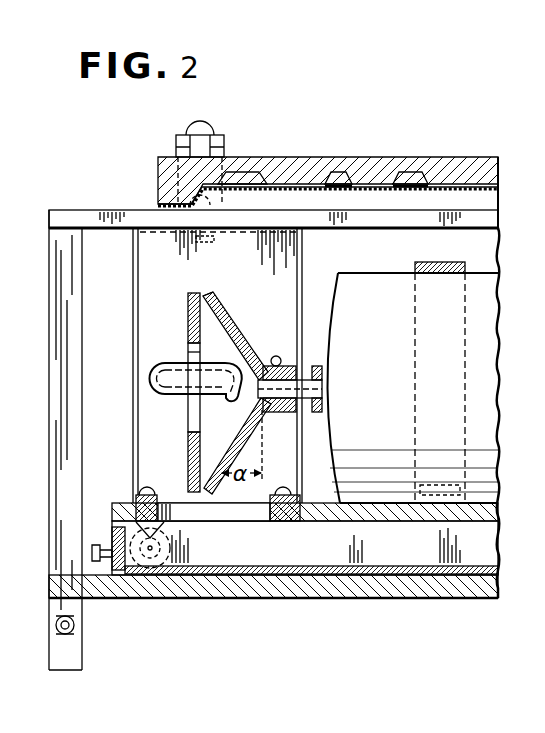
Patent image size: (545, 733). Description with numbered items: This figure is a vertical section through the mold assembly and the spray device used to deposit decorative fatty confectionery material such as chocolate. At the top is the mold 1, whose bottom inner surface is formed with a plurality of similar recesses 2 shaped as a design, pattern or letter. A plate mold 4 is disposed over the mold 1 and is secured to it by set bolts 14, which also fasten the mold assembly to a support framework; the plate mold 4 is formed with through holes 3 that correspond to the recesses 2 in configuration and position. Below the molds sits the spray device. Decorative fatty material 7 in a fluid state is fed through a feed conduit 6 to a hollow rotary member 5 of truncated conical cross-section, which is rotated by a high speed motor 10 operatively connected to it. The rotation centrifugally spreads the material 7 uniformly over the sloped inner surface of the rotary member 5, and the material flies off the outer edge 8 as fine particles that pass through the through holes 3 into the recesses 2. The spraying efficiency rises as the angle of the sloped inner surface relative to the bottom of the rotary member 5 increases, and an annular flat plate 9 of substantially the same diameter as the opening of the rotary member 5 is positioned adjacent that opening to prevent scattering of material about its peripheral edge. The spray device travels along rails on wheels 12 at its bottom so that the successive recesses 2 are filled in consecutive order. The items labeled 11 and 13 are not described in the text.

The mold 1 is at (300, 170).
The recesses 2 is at (336, 172).
The through holes 3 is at (340, 190).
The plate mold 4 is at (462, 188).
The rotary member 5 is at (229, 319).
The feed conduit 6 is at (168, 395).
The decorative fatty material 7 is at (246, 356).
The outer edge 8 is at (206, 302).
The annular flat plate 9 is at (187, 323).
The high speed motor 10 is at (377, 288).
The housing box 11 is at (296, 292).
The wheels 12 is at (166, 560).
The base housing 13 is at (322, 557).
The set bolts 14 is at (200, 131).